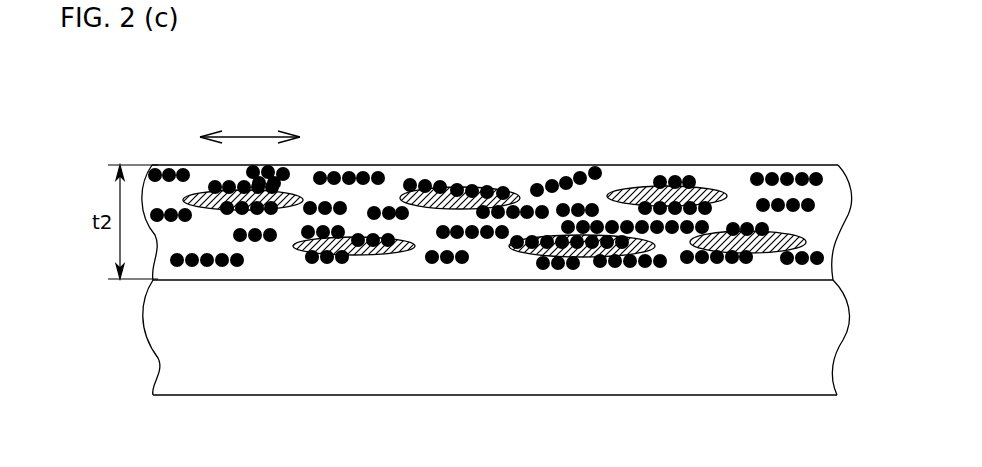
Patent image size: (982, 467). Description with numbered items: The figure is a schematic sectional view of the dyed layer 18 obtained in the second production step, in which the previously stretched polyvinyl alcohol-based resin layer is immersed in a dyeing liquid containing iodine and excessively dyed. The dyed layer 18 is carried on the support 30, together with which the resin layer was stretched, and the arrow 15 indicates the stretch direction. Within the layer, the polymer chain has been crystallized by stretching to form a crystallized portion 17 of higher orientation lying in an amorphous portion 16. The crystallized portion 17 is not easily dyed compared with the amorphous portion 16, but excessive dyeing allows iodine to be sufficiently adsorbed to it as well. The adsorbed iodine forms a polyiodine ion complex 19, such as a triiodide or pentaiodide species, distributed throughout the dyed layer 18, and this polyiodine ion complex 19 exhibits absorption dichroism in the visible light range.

The stretch direction arrow 15 is at (250, 137).
The amorphous portion 16 is at (517, 177).
The crystallized portion 17 is at (632, 180).
The dyed layer 18 is at (837, 167).
The polyiodine ion complex 19 is at (352, 176).
The support 30 is at (553, 395).